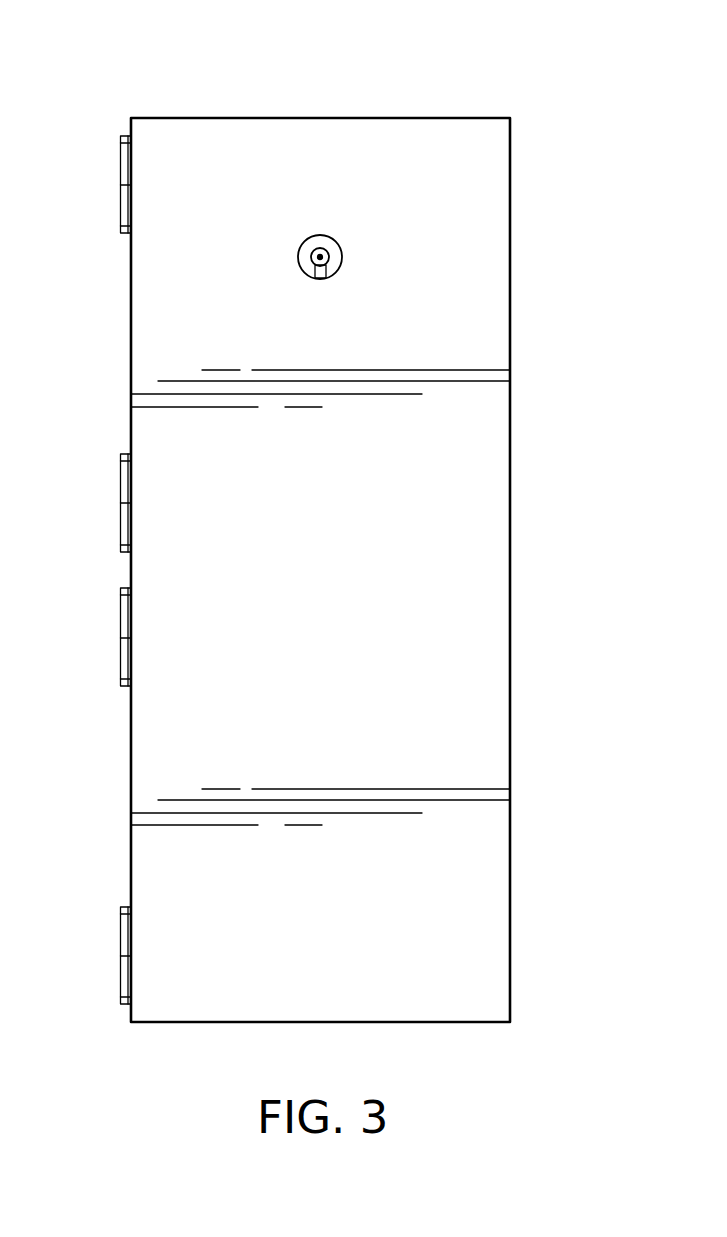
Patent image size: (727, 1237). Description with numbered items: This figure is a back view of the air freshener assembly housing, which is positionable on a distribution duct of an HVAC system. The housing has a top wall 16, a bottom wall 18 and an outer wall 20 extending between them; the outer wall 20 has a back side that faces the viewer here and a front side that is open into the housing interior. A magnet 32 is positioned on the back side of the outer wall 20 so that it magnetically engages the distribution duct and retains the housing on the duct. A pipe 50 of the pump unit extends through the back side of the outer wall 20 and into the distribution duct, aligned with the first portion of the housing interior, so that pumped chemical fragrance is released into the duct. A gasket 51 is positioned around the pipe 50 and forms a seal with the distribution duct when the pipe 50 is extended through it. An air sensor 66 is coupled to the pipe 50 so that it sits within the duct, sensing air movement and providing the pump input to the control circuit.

The top wall 16 is at (303, 118).
The bottom wall 18 is at (201, 1022).
The outer wall 20 is at (187, 192).
The magnet 32 is at (462, 160).
The pipe 50 is at (322, 236).
The gasket 51 is at (299, 250).
The air sensor 66 is at (321, 278).